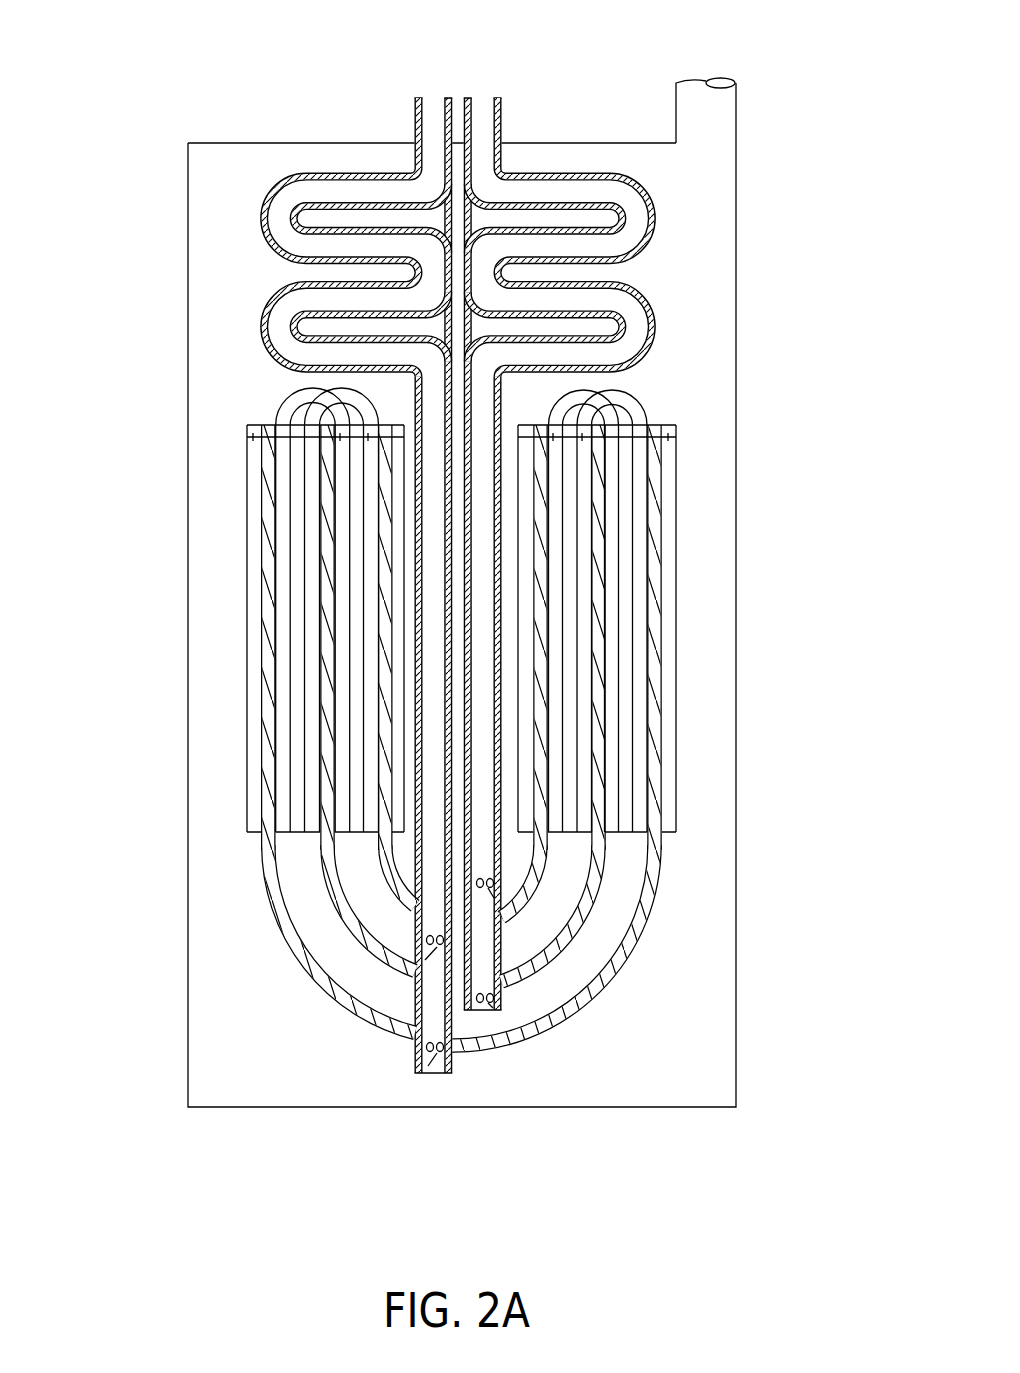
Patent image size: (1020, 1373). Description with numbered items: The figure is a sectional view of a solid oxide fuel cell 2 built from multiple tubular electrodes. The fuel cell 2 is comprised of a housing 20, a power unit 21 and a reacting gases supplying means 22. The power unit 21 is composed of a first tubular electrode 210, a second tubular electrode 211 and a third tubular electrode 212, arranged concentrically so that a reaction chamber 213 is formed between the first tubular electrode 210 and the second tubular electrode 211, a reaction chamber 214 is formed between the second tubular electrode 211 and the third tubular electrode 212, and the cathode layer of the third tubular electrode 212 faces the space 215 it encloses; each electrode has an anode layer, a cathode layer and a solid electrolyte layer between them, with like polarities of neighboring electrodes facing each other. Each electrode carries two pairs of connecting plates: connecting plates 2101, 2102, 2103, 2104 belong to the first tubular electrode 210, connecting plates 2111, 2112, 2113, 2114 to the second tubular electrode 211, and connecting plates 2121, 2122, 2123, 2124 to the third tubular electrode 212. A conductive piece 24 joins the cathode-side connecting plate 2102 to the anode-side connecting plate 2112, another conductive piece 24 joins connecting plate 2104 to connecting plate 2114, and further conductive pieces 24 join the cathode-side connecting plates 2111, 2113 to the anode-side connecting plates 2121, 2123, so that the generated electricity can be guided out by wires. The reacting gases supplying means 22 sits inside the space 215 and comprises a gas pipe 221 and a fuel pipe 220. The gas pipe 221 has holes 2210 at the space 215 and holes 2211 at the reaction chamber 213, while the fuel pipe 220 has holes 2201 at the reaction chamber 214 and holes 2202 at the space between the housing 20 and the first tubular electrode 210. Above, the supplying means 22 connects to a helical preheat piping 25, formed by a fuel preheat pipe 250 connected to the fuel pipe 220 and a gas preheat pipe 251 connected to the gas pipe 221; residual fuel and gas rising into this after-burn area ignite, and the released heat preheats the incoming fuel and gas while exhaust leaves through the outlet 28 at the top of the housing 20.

The fuel cell 2 is at (162, 99).
The housing 20 is at (738, 960).
The power unit 21 is at (460, 803).
The reacting gases supplying means 22 is at (468, 675).
The conductive piece 24 is at (650, 789).
The preheat piping 25 is at (463, 188).
The outlet port 28 is at (727, 117).
The fuel preheat pipe 250 is at (277, 215).
The gas preheat pipe 251 is at (638, 214).
The first tubular electrode 210 is at (388, 950).
The second tubular electrode 211 is at (403, 967).
The third tubular electrode 212 is at (595, 925).
The reaction chamber 213 is at (630, 906).
The reaction chamber 214 is at (648, 930).
The space 215 is at (407, 883).
The fuel pipe 220 is at (603, 675).
The gas pipe 221 is at (646, 675).
The holes 2201 is at (412, 990).
The holes 2202 is at (430, 1052).
The holes 2210 is at (480, 1004).
The holes 2211 is at (550, 935).
The connecting plate 2101 is at (256, 566).
The connecting plate 2102 is at (282, 605).
The connecting plate 2103 is at (670, 566).
The connecting plate 2104 is at (640, 605).
The connecting plate 2111 is at (322, 818).
The connecting plate 2112 is at (322, 858).
The connecting plate 2113 is at (632, 892).
The connecting plate 2114 is at (620, 905).
The connecting plate 2121 is at (375, 695).
The connecting plate 2122 is at (392, 722).
The connecting plate 2123 is at (558, 650).
The connecting plate 2124 is at (522, 700).